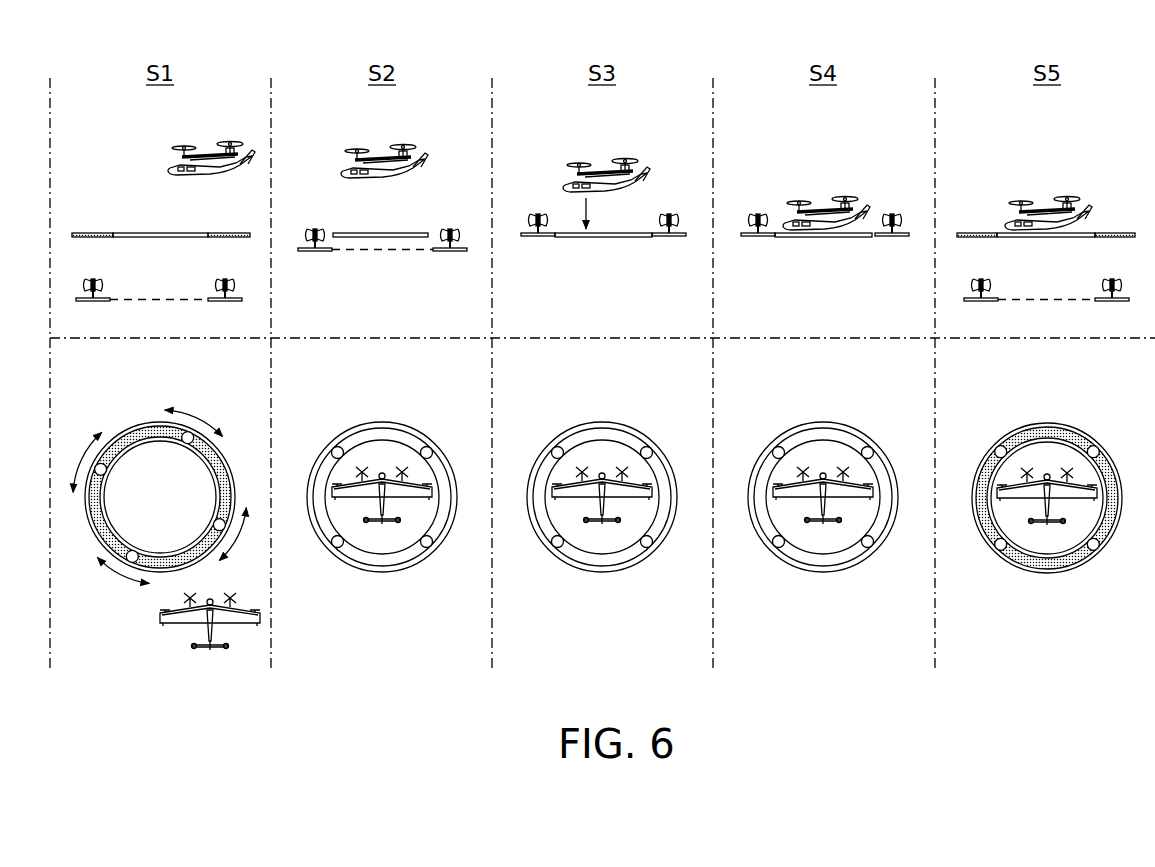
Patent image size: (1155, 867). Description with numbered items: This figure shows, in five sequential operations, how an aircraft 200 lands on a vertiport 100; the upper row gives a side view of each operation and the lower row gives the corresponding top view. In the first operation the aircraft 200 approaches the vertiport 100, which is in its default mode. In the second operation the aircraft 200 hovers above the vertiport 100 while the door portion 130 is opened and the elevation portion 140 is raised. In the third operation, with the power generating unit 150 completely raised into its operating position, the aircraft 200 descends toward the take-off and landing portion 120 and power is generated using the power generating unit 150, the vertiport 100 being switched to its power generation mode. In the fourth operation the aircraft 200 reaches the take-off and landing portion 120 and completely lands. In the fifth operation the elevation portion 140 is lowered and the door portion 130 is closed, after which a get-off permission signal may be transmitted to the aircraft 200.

The vertiport 100 is at (115, 427).
The take-off and landing portion 120 is at (148, 232).
The door portion 130 is at (89, 232).
The elevation portion 140 is at (100, 301).
The power generating unit 150 is at (100, 283).
The aircraft 200 is at (206, 149).